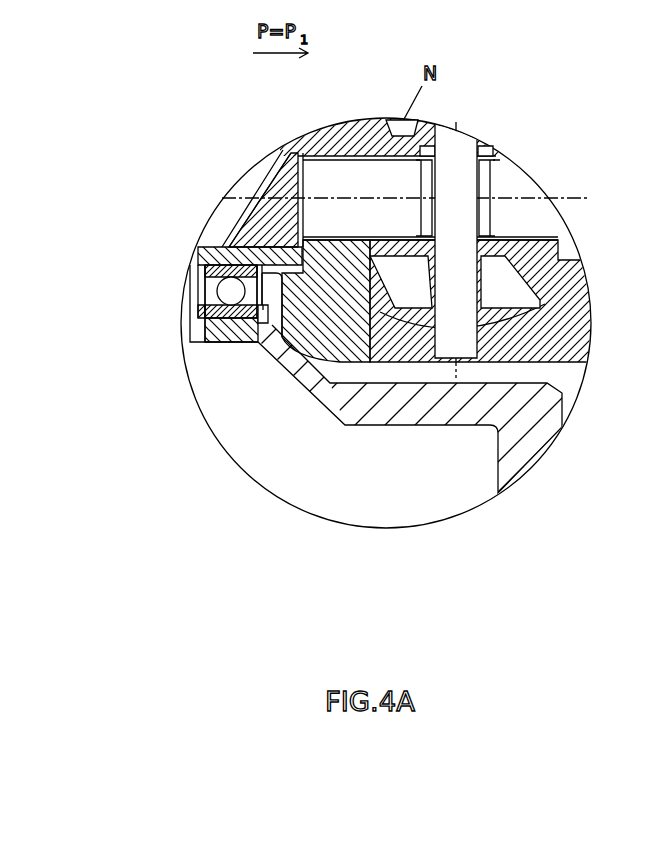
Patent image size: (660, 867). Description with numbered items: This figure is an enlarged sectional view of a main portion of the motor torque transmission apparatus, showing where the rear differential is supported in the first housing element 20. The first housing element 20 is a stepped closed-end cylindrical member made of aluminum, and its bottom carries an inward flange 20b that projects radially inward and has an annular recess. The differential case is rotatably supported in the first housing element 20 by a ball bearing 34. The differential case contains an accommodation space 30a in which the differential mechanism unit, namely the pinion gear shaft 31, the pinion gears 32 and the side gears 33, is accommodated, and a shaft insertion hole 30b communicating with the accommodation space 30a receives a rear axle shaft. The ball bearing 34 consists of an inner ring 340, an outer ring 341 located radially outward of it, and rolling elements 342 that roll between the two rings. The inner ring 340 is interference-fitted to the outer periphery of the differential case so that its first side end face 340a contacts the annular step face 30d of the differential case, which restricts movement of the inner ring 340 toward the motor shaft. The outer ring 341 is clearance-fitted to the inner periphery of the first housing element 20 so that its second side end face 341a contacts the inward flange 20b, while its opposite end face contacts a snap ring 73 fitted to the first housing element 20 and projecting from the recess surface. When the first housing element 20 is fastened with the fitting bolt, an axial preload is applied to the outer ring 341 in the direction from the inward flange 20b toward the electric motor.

The first housing element 20 is at (322, 406).
The inward flange 20b is at (189, 304).
The accommodation space 30a is at (381, 324).
The shaft insertion hole 30b is at (268, 177).
The annular step face 30d is at (243, 320).
The pinion gear shaft 31 is at (446, 344).
The pinion gear 32 is at (557, 362).
The side gear 33 is at (368, 248).
The ball bearing 34 is at (211, 341).
The outer ring 341 is at (218, 322).
The second side end face 341a is at (197, 310).
The rolling element 342 is at (222, 290).
The inner ring 340 is at (213, 246).
The first side end face 340a is at (266, 273).
The snap ring 73 is at (270, 310).